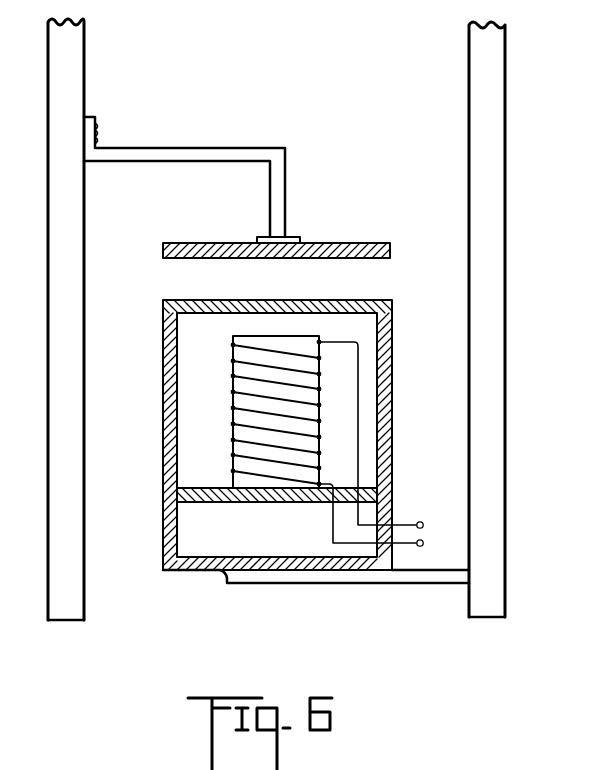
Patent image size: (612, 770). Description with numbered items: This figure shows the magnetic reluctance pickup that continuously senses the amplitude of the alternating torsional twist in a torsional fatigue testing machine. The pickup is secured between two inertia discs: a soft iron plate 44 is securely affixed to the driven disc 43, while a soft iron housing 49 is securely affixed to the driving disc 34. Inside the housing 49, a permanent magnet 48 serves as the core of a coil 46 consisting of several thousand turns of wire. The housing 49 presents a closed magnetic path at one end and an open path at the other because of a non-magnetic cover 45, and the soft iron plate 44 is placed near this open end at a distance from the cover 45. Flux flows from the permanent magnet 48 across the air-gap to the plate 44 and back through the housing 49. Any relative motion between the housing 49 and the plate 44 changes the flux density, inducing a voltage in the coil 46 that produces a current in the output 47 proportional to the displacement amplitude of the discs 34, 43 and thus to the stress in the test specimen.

The driving disc 34 is at (478, 65).
The driven disc 43 is at (70, 78).
The soft iron plate 44 is at (345, 242).
The non-magnetic cover 45 is at (362, 300).
The coil 46 is at (232, 441).
The output 47 is at (426, 537).
The permanent magnet 48 is at (245, 405).
The soft iron housing 49 is at (166, 520).